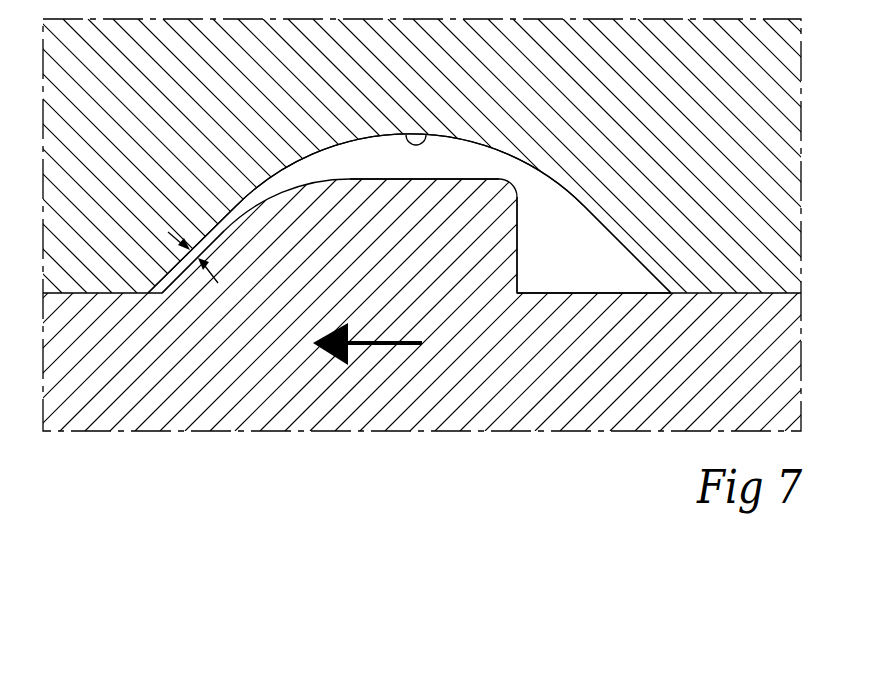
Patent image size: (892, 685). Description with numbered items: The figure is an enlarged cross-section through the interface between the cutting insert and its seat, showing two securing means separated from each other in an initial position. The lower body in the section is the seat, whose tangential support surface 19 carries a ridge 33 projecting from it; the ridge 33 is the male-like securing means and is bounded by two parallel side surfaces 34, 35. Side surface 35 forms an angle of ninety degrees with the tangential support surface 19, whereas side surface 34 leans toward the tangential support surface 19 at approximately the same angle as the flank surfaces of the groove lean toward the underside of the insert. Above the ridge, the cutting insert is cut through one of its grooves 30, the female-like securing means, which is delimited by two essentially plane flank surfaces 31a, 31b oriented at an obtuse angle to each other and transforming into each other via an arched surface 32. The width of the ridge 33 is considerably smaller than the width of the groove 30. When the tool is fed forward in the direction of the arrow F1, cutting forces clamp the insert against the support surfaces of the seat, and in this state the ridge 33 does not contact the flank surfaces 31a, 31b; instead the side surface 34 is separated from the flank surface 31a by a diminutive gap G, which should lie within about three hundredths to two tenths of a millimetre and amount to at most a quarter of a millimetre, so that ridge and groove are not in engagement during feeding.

The tangential support surface 19 is at (595, 292).
The groove 30 is at (356, 160).
The flank surface 31a is at (213, 232).
The flank surface 31b is at (622, 247).
The arched surface 32 is at (426, 137).
The ridge 33 is at (486, 162).
The side surface 34 is at (207, 244).
The side surface 35 is at (519, 247).
The gap G is at (168, 232).
The feed direction arrow F1 is at (367, 341).